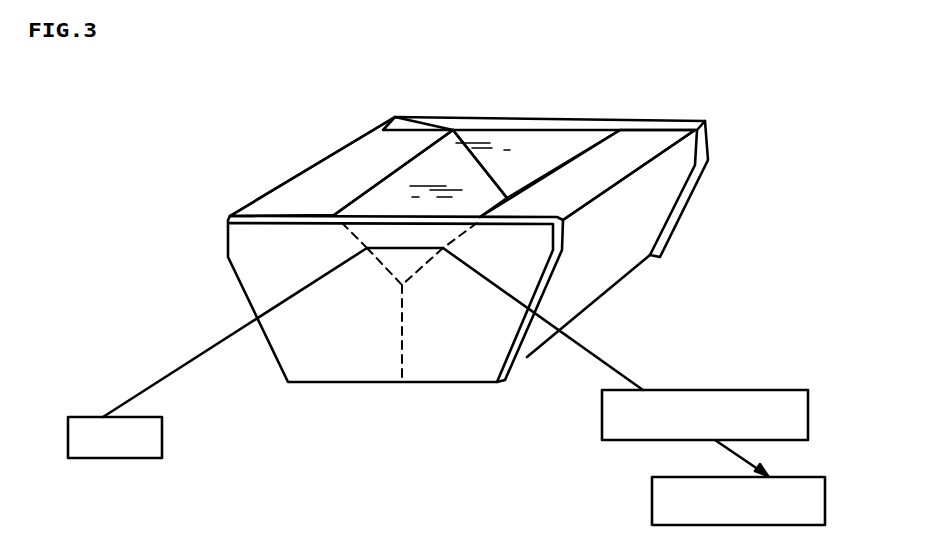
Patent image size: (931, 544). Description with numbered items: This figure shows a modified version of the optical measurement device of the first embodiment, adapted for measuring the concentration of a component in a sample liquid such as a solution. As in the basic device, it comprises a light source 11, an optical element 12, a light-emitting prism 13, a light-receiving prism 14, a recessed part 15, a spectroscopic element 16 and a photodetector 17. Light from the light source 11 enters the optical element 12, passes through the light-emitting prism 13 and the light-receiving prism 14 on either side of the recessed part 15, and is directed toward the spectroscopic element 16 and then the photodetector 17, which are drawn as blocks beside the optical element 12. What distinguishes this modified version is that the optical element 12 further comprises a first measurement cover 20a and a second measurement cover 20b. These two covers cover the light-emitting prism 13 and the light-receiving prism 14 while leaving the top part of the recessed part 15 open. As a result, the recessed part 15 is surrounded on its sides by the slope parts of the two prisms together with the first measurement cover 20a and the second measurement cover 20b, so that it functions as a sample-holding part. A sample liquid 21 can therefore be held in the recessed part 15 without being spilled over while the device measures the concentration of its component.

The light source 11 is at (153, 433).
The optical element 12 is at (448, 388).
The light-emitting prism 13 is at (327, 197).
The light-receiving prism 14 is at (620, 160).
The recessed part 15 is at (390, 203).
The spectroscopic element 16 is at (713, 402).
The photodetector 17 is at (667, 508).
The first measurement cover 20a is at (543, 295).
The second measurement cover 20b is at (693, 172).
The sample liquid 21 is at (522, 147).